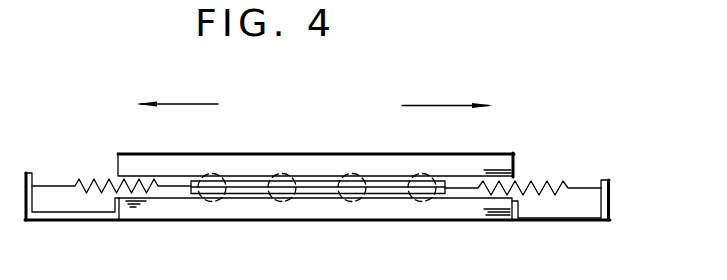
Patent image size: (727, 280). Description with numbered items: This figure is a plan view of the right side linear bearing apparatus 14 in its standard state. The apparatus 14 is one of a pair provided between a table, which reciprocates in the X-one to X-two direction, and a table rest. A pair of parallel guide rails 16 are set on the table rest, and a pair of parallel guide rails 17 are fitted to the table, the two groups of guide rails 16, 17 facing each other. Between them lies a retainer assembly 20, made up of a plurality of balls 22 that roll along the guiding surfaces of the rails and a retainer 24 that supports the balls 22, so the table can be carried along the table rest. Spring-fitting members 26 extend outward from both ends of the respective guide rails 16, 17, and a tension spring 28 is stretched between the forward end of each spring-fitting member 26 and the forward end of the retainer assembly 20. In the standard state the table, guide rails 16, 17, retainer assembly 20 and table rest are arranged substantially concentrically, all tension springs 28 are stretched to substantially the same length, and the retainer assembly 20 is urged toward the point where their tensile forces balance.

The linear bearing apparatus 14 is at (117, 135).
The guide rails 16 is at (480, 219).
The guide rails 17 is at (480, 167).
The retainer assembly 20 is at (382, 183).
The balls 22 is at (210, 174).
The retainer 24 is at (247, 186).
The spring-fitting members 26 is at (72, 219).
The tension spring 28 is at (93, 176).